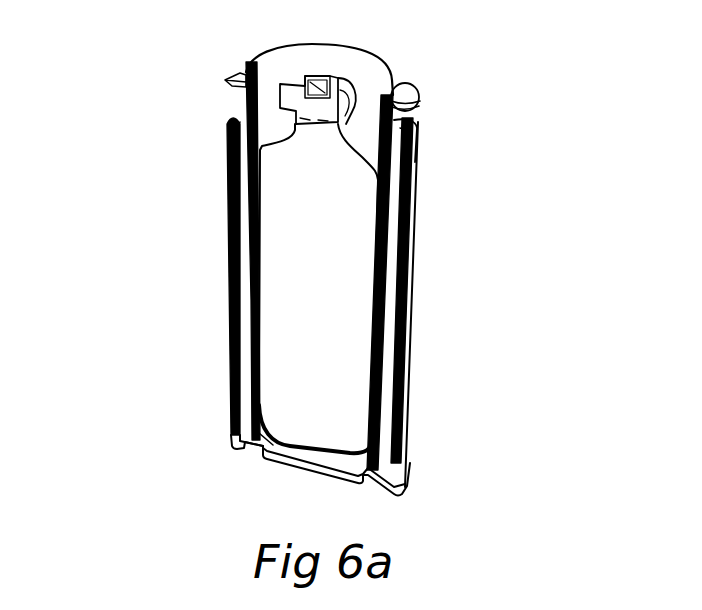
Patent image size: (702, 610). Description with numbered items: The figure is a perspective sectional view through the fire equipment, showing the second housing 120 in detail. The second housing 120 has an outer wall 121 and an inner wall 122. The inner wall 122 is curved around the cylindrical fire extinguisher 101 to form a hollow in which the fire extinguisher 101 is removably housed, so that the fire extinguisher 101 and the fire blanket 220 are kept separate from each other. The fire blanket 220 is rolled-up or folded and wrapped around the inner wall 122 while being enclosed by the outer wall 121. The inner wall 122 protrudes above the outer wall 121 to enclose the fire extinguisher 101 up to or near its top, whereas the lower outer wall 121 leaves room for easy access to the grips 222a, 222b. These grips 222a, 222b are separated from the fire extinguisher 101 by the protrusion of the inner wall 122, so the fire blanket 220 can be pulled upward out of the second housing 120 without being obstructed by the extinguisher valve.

The fire extinguisher 101 is at (292, 263).
The second housing 120 is at (430, 263).
The outer wall 121 is at (410, 363).
The inner wall 122 is at (262, 57).
The fire blanket 220 is at (247, 370).
The grip 222a is at (227, 83).
The grip 222b is at (420, 103).